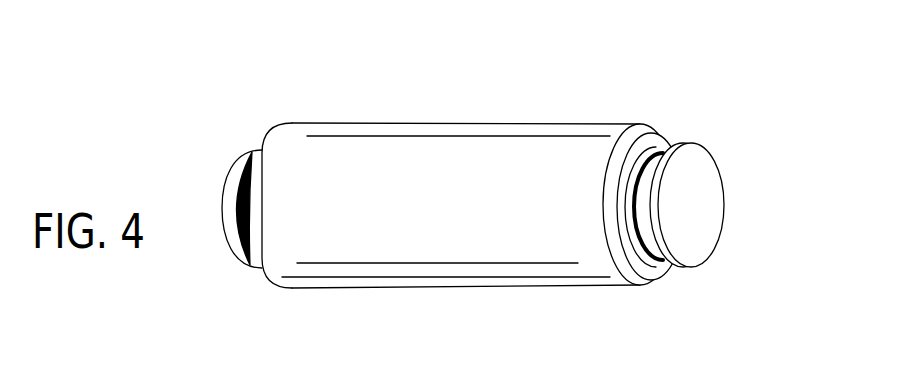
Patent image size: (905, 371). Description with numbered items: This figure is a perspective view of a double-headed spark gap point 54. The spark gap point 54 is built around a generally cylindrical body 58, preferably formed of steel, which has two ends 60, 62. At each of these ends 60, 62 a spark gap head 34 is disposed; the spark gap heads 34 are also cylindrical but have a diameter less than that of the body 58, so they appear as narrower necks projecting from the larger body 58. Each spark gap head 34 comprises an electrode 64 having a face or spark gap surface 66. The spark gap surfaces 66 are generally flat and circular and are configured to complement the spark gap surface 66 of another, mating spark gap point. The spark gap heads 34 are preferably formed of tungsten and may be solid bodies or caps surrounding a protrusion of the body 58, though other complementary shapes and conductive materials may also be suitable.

The spark gap head 34 is at (459, 170).
The double-headed spark gap point 54 is at (459, 197).
The cylindrical body 58 is at (567, 289).
The first end 60 is at (278, 121).
The second end 62 is at (665, 119).
The electrode 64 is at (254, 265).
The spark gap surface 66 is at (208, 182).